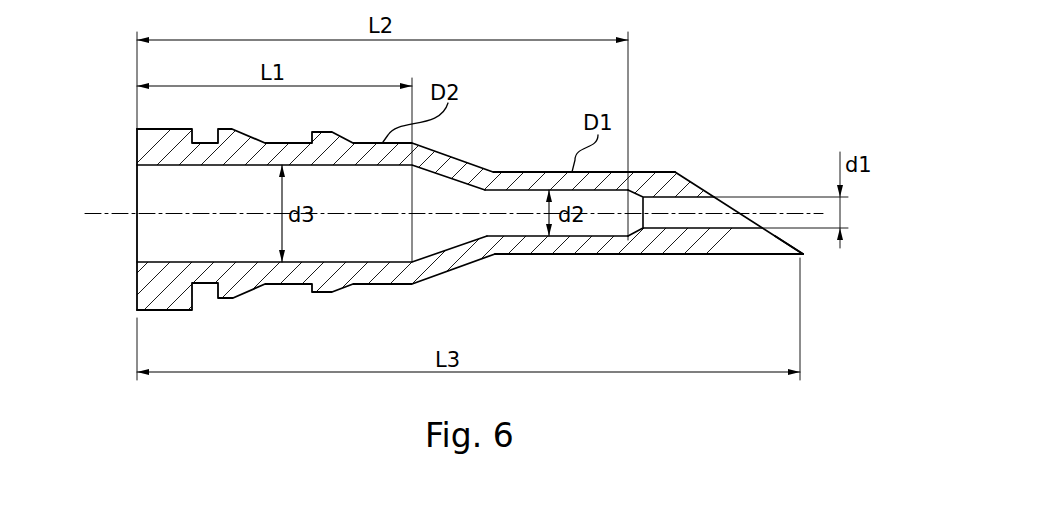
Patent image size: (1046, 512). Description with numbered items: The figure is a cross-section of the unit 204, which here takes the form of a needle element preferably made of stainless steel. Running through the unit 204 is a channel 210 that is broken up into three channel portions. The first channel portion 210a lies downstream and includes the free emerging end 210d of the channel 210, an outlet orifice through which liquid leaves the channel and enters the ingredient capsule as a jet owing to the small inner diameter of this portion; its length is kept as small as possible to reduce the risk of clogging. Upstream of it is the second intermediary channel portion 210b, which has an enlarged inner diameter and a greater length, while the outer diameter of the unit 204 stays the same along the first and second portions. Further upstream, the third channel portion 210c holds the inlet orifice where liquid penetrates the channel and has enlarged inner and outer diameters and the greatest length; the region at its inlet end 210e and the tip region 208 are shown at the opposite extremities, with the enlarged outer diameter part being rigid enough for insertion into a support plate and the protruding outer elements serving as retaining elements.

The channel 210 is at (352, 237).
The first channel portion 210a is at (663, 205).
The second intermediary channel portion 210b is at (529, 194).
The third channel portion 210c is at (340, 183).
The free emerging end 210d is at (738, 210).
The inlet end face 210e is at (137, 187).
The unit 204 is at (600, 292).
The nozzle tip 208 is at (785, 286).